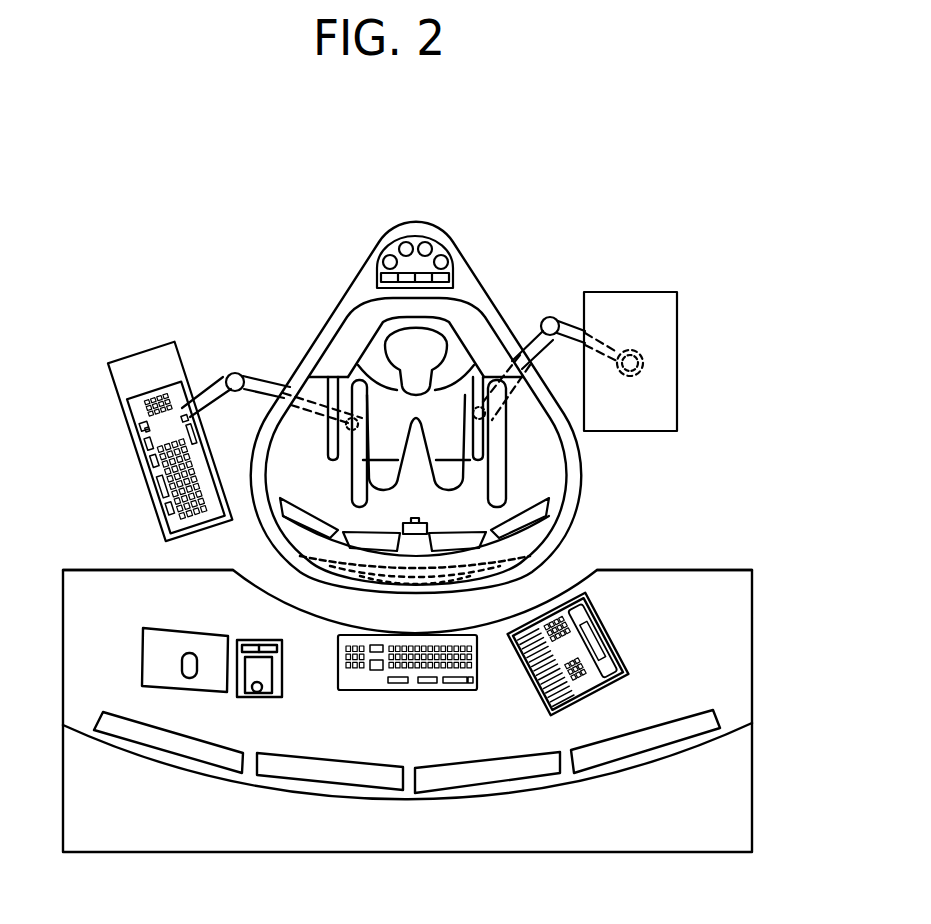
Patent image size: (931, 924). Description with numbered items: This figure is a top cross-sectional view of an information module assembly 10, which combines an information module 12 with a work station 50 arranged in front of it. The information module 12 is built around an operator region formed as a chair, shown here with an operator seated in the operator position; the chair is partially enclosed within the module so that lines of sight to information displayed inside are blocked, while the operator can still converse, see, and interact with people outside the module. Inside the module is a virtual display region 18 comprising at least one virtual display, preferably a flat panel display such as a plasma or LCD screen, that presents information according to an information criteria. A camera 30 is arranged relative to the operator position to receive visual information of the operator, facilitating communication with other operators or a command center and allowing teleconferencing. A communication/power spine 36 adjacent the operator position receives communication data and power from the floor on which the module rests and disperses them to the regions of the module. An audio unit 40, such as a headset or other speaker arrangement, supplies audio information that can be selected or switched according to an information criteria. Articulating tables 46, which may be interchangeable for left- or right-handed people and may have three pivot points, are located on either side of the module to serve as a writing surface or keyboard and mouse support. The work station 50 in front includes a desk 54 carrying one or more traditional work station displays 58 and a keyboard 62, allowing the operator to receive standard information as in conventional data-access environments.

The information module assembly 10 is at (462, 163).
The information module 12 is at (331, 316).
The virtual display region 18 is at (570, 530).
The camera 30 is at (332, 528).
The communication/power spine 36 is at (425, 265).
The audio unit 40 is at (520, 364).
The articulating tables 46 is at (122, 372).
The work station 50 is at (717, 677).
The desk 54 is at (733, 613).
The work station displays 58 is at (657, 743).
The keyboard 62 is at (458, 646).